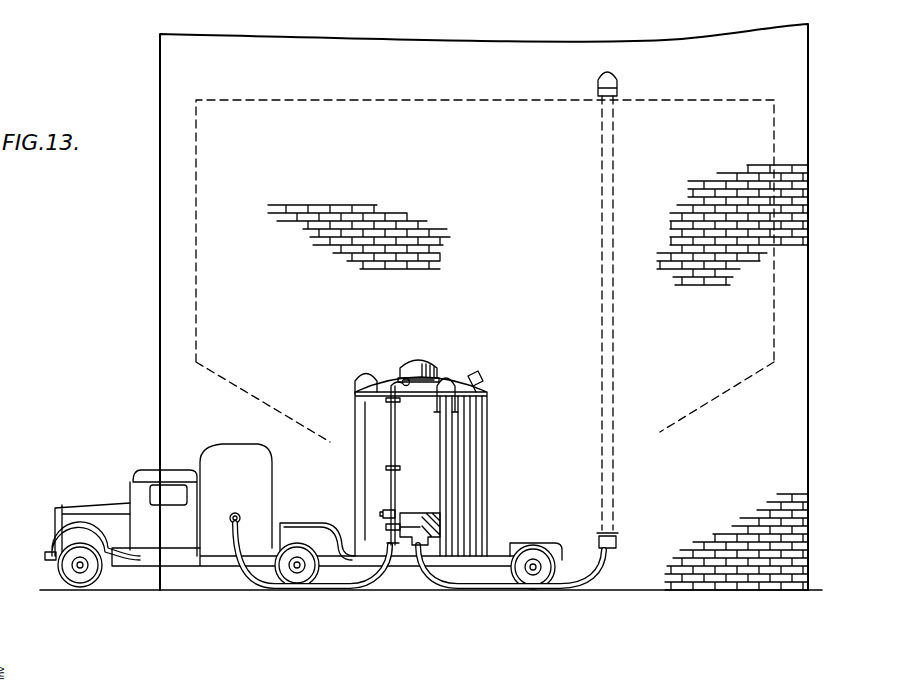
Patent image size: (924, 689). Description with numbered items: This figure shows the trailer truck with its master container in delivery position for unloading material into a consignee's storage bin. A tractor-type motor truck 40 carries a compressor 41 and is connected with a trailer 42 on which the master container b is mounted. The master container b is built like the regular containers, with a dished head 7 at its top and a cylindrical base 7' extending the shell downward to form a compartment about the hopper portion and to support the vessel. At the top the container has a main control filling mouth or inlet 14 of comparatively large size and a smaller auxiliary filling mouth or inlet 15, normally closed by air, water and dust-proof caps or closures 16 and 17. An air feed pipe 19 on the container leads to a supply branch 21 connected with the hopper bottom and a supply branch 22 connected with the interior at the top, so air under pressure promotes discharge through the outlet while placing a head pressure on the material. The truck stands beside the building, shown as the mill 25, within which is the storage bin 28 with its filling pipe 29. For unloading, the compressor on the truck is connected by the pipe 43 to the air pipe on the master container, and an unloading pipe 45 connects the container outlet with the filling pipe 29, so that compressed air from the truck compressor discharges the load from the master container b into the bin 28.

The mill 25 is at (792, 61).
The storage bin 28 is at (768, 299).
The filling pipe 29 is at (606, 323).
The motor truck 40 is at (182, 565).
The compressor 41 is at (270, 486).
The trailer 42 is at (510, 556).
The pipe 43 is at (376, 580).
The unloading pipe 45 is at (511, 585).
The cylindrical base 7' is at (511, 584).
The master container b is at (477, 460).
The dished head 7 is at (406, 377).
The cap or closure 16 is at (421, 360).
The main control filling mouth or inlet 14 is at (426, 372).
The cap or closure 17 is at (476, 375).
The auxiliary filling mouth or inlet 15 is at (484, 382).
The supply branch 22 is at (396, 452).
The air feed pipe 19 is at (388, 512).
The supply branch 21 is at (410, 524).